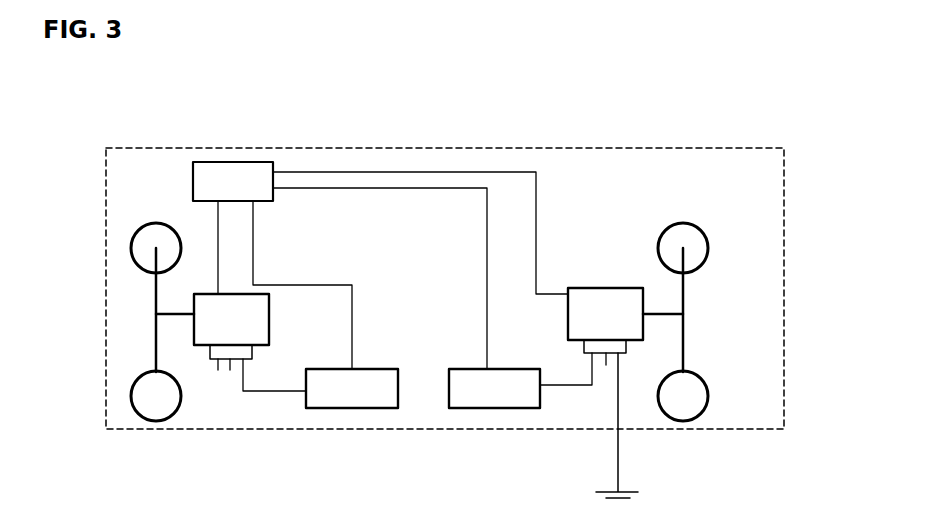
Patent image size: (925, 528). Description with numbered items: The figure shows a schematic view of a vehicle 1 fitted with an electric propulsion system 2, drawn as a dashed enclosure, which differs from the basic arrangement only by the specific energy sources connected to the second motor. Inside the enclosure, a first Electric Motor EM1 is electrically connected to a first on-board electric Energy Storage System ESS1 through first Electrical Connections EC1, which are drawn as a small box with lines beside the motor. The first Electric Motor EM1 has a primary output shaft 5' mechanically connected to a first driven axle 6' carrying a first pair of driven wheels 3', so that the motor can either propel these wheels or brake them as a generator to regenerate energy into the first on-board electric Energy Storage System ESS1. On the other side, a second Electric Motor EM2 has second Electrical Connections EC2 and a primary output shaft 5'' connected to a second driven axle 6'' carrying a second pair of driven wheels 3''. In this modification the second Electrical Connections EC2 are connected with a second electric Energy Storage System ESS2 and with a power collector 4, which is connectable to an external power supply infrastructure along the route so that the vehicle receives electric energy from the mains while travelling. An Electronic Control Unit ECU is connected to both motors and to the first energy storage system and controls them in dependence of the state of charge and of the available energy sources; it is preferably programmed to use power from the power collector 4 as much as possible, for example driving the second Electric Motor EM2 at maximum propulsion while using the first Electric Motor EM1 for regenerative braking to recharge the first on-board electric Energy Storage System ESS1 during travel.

The vehicle 1 is at (529, 109).
The electric propulsion system 2 is at (243, 432).
The first pair of driven wheels 3' is at (156, 299).
The second pair of driven wheels 3'' is at (704, 320).
The power collector 4 is at (606, 492).
The primary output shaft 5' is at (185, 280).
The primary output shaft 5'' is at (643, 282).
The first driven axle 6' is at (116, 310).
The second driven axle 6'' is at (722, 310).
The first electrical connections EC1 is at (210, 358).
The second electrical connections EC2 is at (626, 352).
The electronic control unit ECU is at (233, 181).
The first electric motor EM1 is at (231, 319).
The second electric motor EM2 is at (605, 314).
The first on-board electric energy storage system ESS1 is at (352, 388).
The second electric energy storage system ESS2 is at (494, 388).